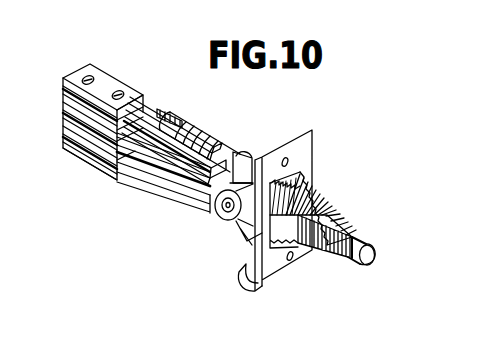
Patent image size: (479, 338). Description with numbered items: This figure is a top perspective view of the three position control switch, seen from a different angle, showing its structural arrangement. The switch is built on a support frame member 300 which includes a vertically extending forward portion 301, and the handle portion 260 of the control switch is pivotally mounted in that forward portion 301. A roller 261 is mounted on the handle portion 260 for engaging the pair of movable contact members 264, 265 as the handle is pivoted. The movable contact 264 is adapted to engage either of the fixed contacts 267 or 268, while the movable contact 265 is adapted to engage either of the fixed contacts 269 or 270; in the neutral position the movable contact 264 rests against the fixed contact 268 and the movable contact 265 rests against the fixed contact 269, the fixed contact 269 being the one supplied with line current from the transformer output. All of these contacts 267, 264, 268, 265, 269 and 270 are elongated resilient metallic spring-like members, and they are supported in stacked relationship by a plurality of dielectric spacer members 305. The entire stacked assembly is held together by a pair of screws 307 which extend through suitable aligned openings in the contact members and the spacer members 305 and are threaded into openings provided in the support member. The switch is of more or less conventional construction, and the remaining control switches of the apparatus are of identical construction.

The handle portion 260 is at (328, 212).
The roller 261 is at (230, 222).
The movable contact 264 is at (141, 133).
The movable contact 265 is at (158, 178).
The fixed contact 267 is at (143, 117).
The fixed contact 268 is at (176, 158).
The fixed contact 269 is at (134, 160).
The fixed contact 270 is at (183, 199).
The support frame member 300 is at (280, 265).
The vertically extending forward portion 301 is at (310, 156).
The dielectric spacer members 305 is at (63, 126).
The screws 307 is at (118, 92).